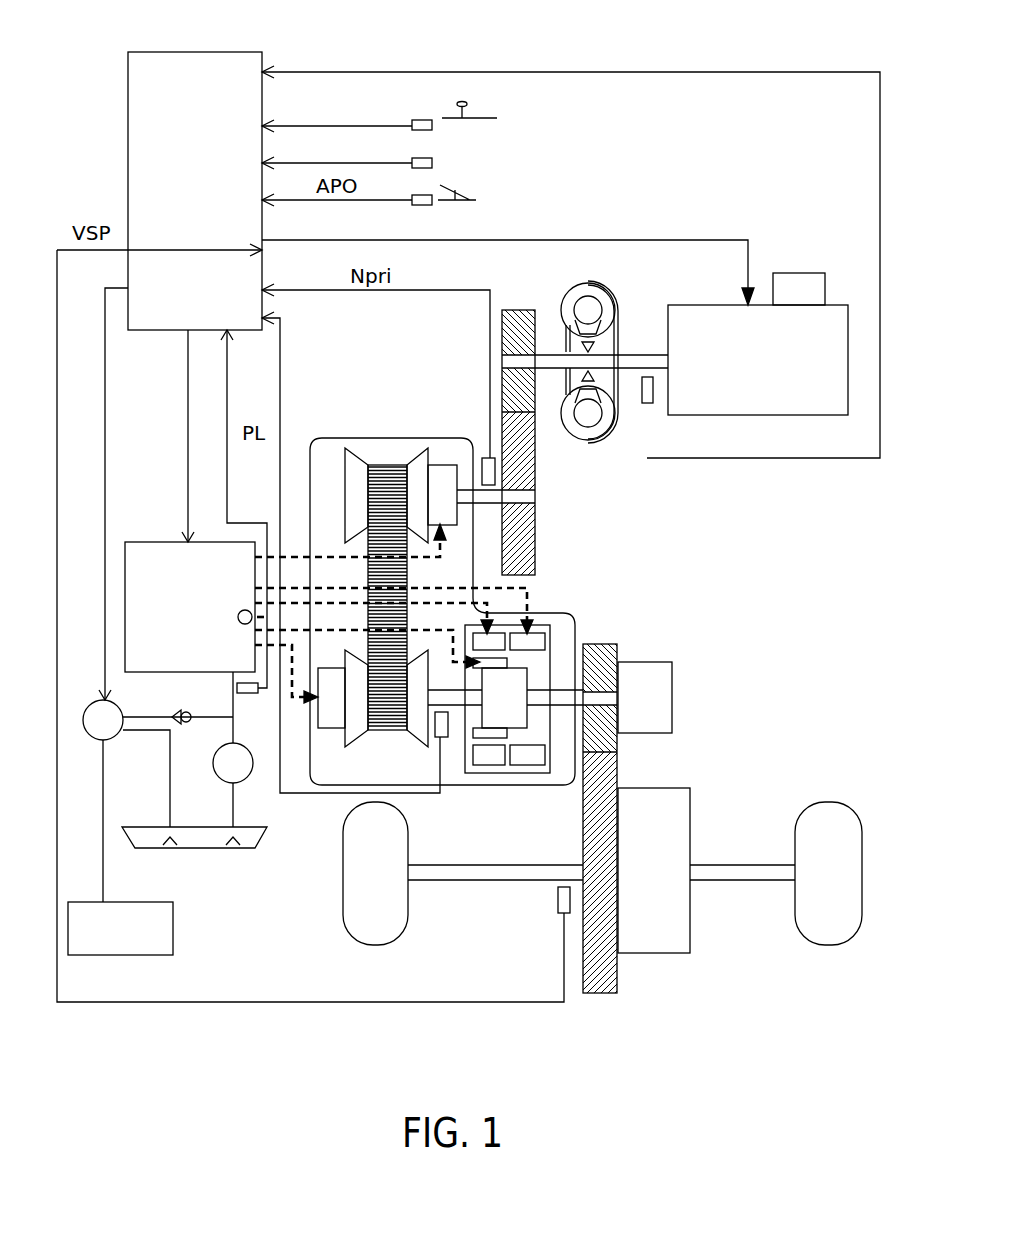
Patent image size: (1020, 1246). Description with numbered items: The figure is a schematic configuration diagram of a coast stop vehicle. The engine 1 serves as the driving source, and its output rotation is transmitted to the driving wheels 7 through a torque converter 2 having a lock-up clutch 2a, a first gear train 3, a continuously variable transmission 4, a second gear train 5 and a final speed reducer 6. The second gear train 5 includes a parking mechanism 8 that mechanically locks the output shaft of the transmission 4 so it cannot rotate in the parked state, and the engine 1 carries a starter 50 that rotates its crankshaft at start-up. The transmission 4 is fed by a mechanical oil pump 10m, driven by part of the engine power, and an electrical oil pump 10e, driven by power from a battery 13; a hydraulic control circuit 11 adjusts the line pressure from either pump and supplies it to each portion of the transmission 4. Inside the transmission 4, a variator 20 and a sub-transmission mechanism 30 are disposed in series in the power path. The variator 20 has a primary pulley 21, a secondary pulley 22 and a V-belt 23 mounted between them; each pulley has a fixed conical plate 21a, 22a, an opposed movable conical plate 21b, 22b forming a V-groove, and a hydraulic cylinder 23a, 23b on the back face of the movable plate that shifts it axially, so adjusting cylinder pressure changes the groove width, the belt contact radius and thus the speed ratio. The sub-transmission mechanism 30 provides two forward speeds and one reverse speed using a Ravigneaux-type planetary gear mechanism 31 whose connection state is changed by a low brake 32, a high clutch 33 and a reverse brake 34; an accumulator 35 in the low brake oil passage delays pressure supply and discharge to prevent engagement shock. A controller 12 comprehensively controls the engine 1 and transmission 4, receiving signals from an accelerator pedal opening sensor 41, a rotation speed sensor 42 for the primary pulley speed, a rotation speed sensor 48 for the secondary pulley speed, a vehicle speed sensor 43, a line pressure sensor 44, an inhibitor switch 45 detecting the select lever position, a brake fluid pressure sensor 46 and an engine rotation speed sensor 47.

The engine 1 is at (820, 318).
The torque converter 2 is at (609, 352).
The lock-up clutch 2a is at (616, 346).
The first gear train 3 is at (515, 292).
The transmission 4 is at (468, 440).
The second gear train 5 is at (606, 1010).
The final speed reducer 6 is at (655, 945).
The driving wheels 7 is at (375, 932).
The parking mechanism 8 is at (660, 690).
The electrical oil pump 10e is at (108, 738).
The mechanical oil pump 10m is at (228, 780).
The hydraulic control circuit 11 is at (145, 546).
The controller 12 is at (250, 62).
The battery 13 is at (168, 942).
The variator 20 is at (391, 602).
The primary pulley 21 is at (387, 454).
The fixed conical plate 21a is at (352, 455).
The movable conical plate 21b is at (418, 460).
The secondary pulley 22 is at (393, 749).
The fixed conical plate 22a is at (415, 725).
The movable conical plate 22b is at (355, 735).
The V-belt 23 is at (388, 465).
The hydraulic cylinder 23a is at (438, 490).
The hydraulic cylinder 23b is at (328, 725).
The sub-transmission mechanism 30 is at (556, 673).
The Ravigneaux-type planetary gear mechanism 31 is at (510, 690).
The low brake 32 is at (493, 640).
The high clutch 33 is at (490, 740).
The reverse brake 34 is at (528, 640).
The accumulator 35 is at (243, 625).
The accelerator pedal opening sensor 41 is at (424, 206).
The rotation speed sensor 42 is at (488, 455).
The vehicle speed sensor 43 is at (558, 898).
The line pressure sensor 44 is at (250, 694).
The inhibitor switch 45 is at (428, 122).
The brake fluid pressure sensor 46 is at (420, 165).
The engine rotation speed sensor 47 is at (645, 405).
The rotation speed sensor 48 is at (445, 740).
The starter 50 is at (783, 282).